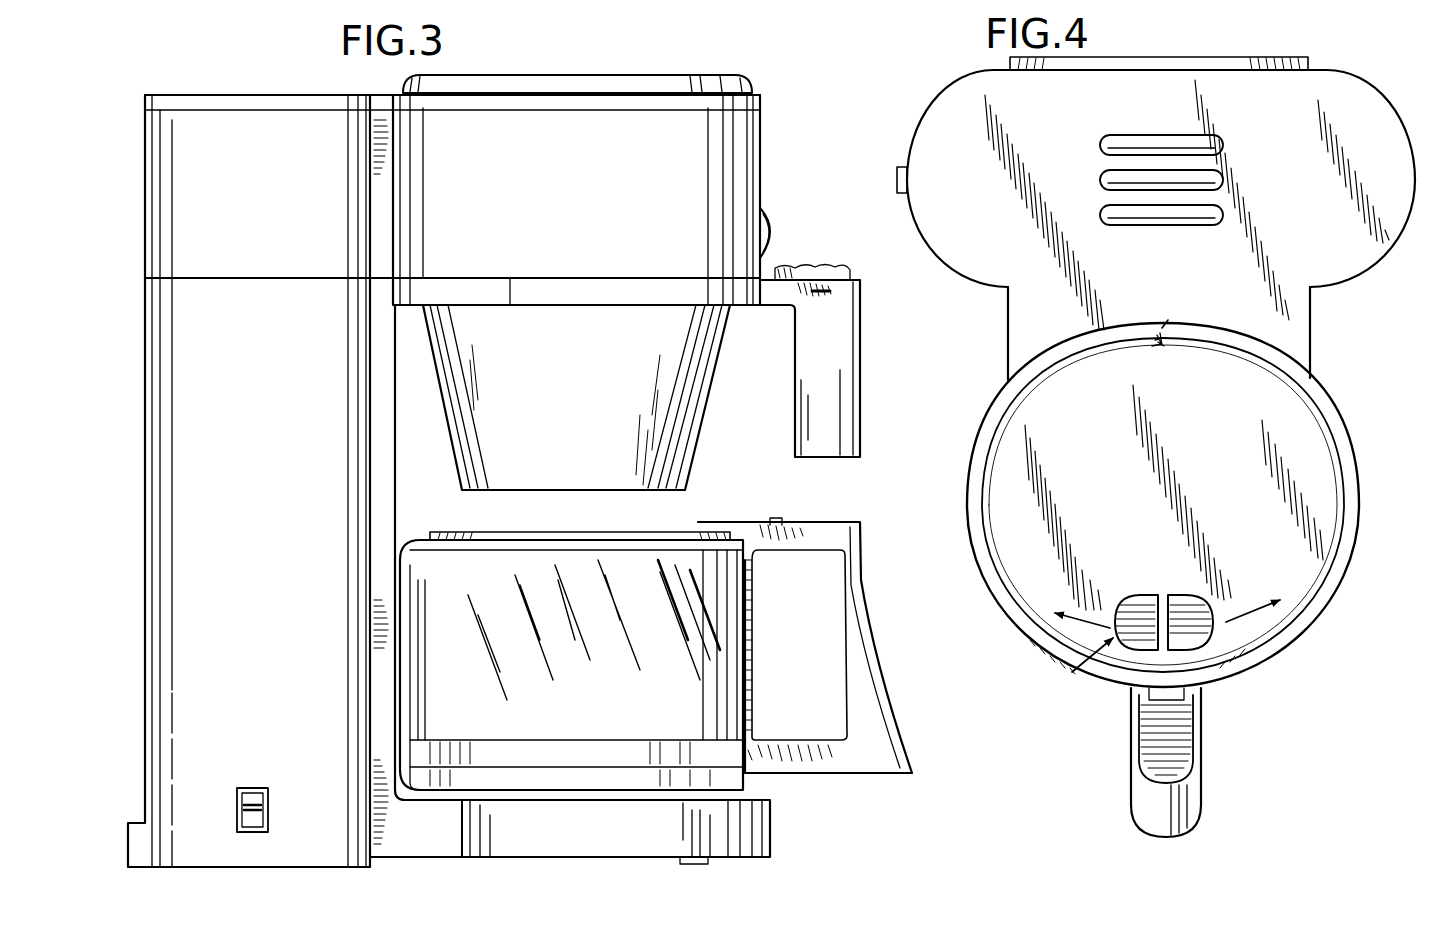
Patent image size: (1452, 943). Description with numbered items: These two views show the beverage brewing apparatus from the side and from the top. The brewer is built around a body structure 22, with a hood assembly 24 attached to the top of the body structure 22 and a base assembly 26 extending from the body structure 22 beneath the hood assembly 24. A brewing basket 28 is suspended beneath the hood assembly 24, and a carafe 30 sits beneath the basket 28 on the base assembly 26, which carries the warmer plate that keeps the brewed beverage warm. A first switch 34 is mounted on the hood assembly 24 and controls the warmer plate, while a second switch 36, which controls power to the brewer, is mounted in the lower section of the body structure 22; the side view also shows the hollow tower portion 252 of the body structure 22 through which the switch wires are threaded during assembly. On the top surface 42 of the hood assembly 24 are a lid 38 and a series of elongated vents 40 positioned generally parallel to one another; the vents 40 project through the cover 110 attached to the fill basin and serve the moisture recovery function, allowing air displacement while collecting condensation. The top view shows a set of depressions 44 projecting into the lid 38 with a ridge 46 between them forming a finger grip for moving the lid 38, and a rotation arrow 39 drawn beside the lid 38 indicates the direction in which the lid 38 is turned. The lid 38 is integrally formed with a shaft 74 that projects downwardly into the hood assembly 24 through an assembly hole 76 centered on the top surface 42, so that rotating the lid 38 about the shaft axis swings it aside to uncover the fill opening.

In FIG. 3, the body structure 22 is at (196, 540).
In FIG. 3, the hood assembly 24 is at (143, 245).
In FIG. 4, the hood assembly 24 is at (1005, 358).
In FIG. 3, the base assembly 26 is at (775, 815).
In FIG. 3, the brewing basket 28 is at (708, 405).
In FIG. 3, the carafe 30 is at (665, 570).
In FIG. 3, the first switch 34 is at (768, 212).
In FIG. 3, the second switch 36 is at (240, 788).
In FIG. 4, the second switch 36 is at (897, 170).
In FIG. 3, the lid 38 is at (403, 83).
In FIG. 4, the lid 38 is at (1030, 572).
In FIG. 4, the rotation arrow 39 is at (1074, 667).
In FIG. 4, the vents 40 is at (1132, 135).
In FIG. 3, the top surface 42 is at (226, 95).
In FIG. 4, the top surface 42 is at (1161, 193).
In FIG. 4, the depressions 44 is at (1195, 645).
In FIG. 4, the ridge 46 is at (1150, 640).
In FIG. 4, the shaft 74 is at (1170, 350).
In FIG. 4, the assembly hole 76 is at (1168, 330).
In FIG. 3, the cover 110 is at (145, 95).
In FIG. 3, the hollow tower portion 252 is at (145, 645).